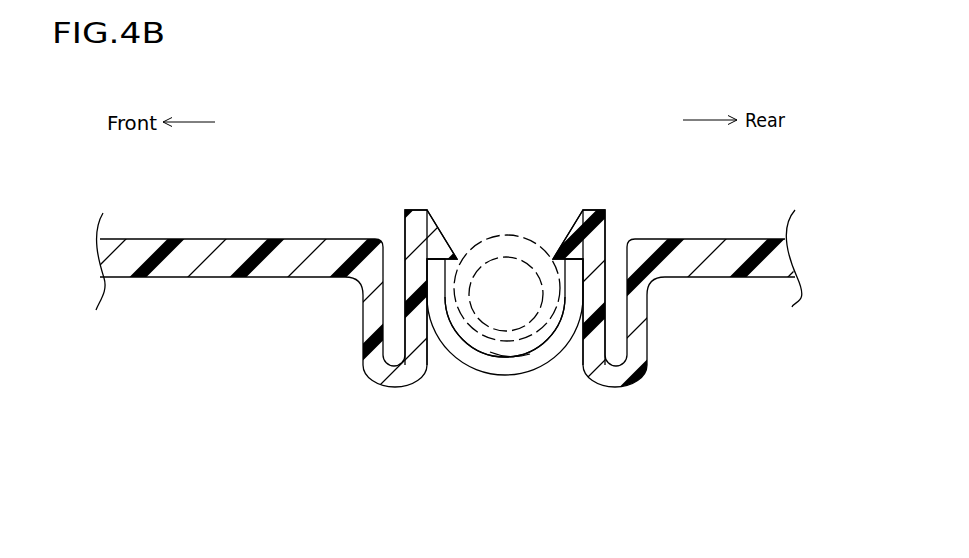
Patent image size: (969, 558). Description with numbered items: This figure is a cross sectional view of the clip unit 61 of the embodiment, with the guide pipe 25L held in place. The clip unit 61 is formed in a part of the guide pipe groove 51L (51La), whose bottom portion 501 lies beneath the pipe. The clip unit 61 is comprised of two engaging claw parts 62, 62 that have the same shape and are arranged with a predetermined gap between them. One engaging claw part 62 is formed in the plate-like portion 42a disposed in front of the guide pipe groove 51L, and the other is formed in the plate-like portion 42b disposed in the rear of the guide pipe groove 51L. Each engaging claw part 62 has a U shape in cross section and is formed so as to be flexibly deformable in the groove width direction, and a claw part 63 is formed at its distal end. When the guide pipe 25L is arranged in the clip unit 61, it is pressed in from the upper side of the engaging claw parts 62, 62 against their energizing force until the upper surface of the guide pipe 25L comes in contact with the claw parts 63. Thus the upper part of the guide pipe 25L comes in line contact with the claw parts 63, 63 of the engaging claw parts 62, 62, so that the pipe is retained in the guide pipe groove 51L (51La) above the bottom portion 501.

The plate-like portion 42a is at (208, 240).
The plate-like portion 42b is at (710, 239).
The clip unit 61 is at (501, 236).
The engaging claw part 62 is at (422, 210).
The claw part 63 is at (459, 258).
The guide pipe groove 51L is at (483, 398).
The guide pipe groove 51La is at (453, 358).
The guide pipe 25L is at (500, 340).
The bottom portion 501 is at (523, 348).